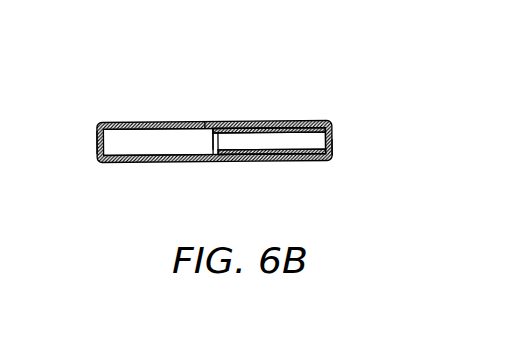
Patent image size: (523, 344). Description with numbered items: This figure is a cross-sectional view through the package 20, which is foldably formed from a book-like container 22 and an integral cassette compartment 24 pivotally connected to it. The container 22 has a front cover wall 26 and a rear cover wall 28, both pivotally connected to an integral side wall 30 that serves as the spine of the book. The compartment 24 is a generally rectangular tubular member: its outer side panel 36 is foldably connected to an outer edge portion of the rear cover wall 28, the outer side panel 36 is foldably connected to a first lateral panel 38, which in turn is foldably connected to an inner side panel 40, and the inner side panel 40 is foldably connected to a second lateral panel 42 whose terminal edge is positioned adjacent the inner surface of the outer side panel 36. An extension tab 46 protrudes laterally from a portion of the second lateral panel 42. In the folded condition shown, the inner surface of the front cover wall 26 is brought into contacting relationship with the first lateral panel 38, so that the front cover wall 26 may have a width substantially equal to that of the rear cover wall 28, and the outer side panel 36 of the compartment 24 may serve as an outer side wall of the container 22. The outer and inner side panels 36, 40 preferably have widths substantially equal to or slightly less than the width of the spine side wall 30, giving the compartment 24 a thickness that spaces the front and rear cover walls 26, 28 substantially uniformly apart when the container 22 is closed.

The package 20 is at (268, 83).
The book-like container 22 is at (98, 122).
The cassette compartment 24 is at (338, 133).
The front cover wall 26 is at (141, 122).
The rear cover wall 28 is at (113, 162).
The side wall 30 is at (96, 150).
The outer side panel 36 is at (335, 152).
The first lateral panel 38 is at (288, 122).
The inner side panel 40 is at (200, 122).
The second lateral panel 42 is at (288, 162).
The extension tab 46 is at (212, 144).